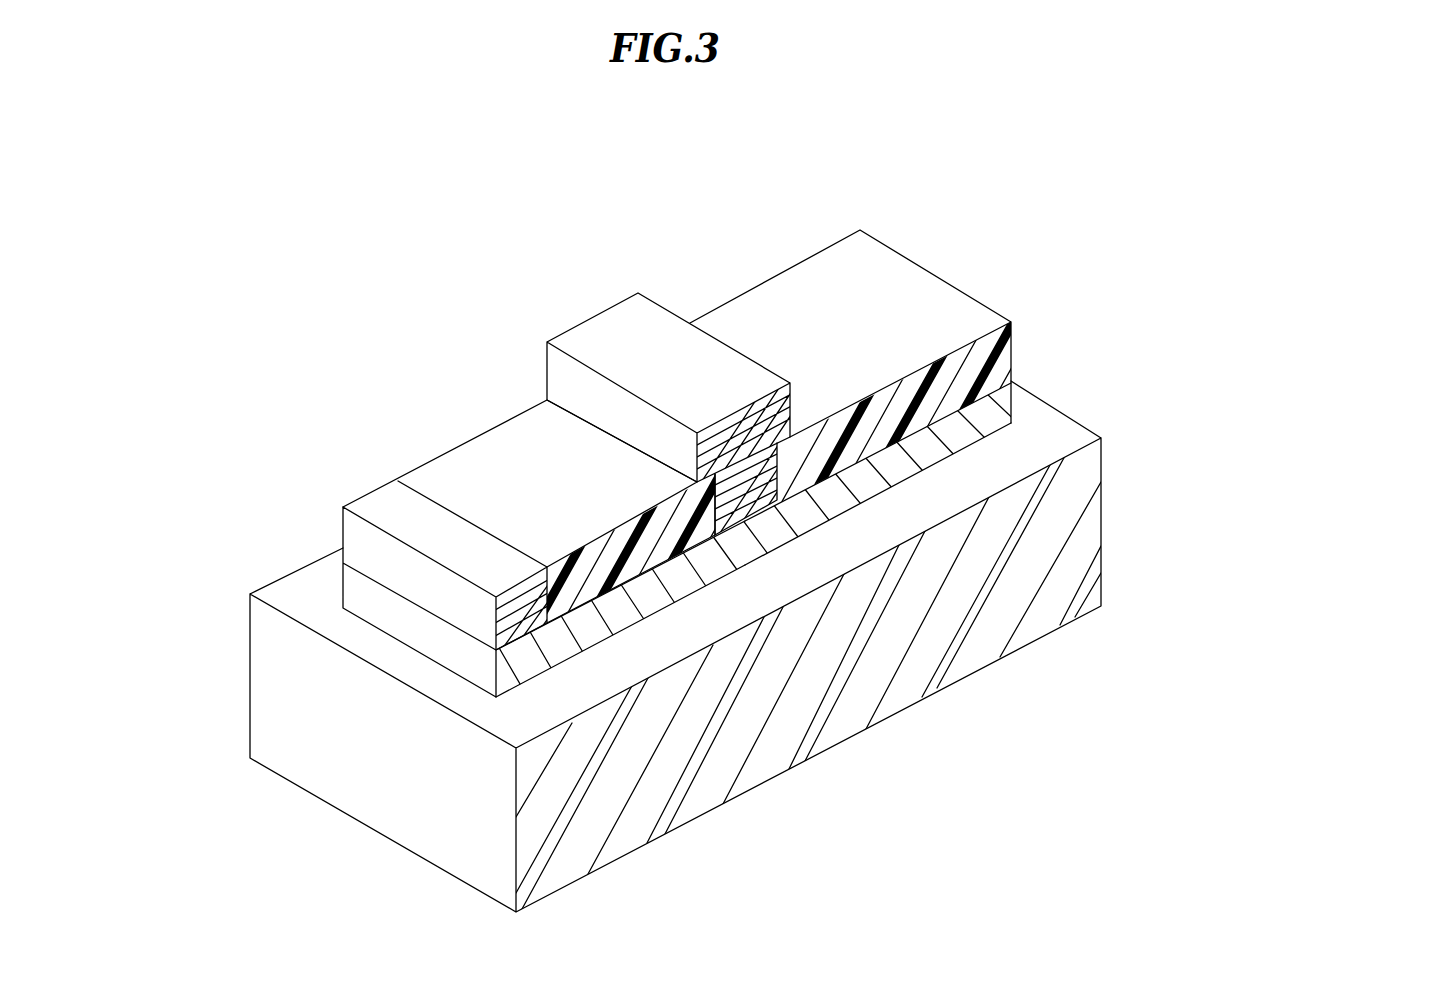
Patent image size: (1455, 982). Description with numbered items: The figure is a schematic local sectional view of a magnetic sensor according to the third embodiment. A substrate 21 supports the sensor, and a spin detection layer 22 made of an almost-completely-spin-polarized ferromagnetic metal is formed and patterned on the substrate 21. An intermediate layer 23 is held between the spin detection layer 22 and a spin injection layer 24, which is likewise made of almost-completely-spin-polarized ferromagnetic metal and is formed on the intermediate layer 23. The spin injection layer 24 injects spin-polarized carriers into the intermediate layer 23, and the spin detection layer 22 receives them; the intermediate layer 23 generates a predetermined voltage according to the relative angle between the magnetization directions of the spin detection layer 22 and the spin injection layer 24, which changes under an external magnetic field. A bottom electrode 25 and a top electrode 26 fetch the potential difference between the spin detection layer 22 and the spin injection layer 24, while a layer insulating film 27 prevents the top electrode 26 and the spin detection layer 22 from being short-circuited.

The substrate 21 is at (685, 803).
The spin detection layer 22 is at (988, 409).
The intermediate layer 23 is at (720, 480).
The spin injection layer 24 is at (740, 491).
The bottom electrode 25 is at (348, 536).
The top electrode 26 is at (595, 332).
The layer insulating film 27 is at (452, 462).